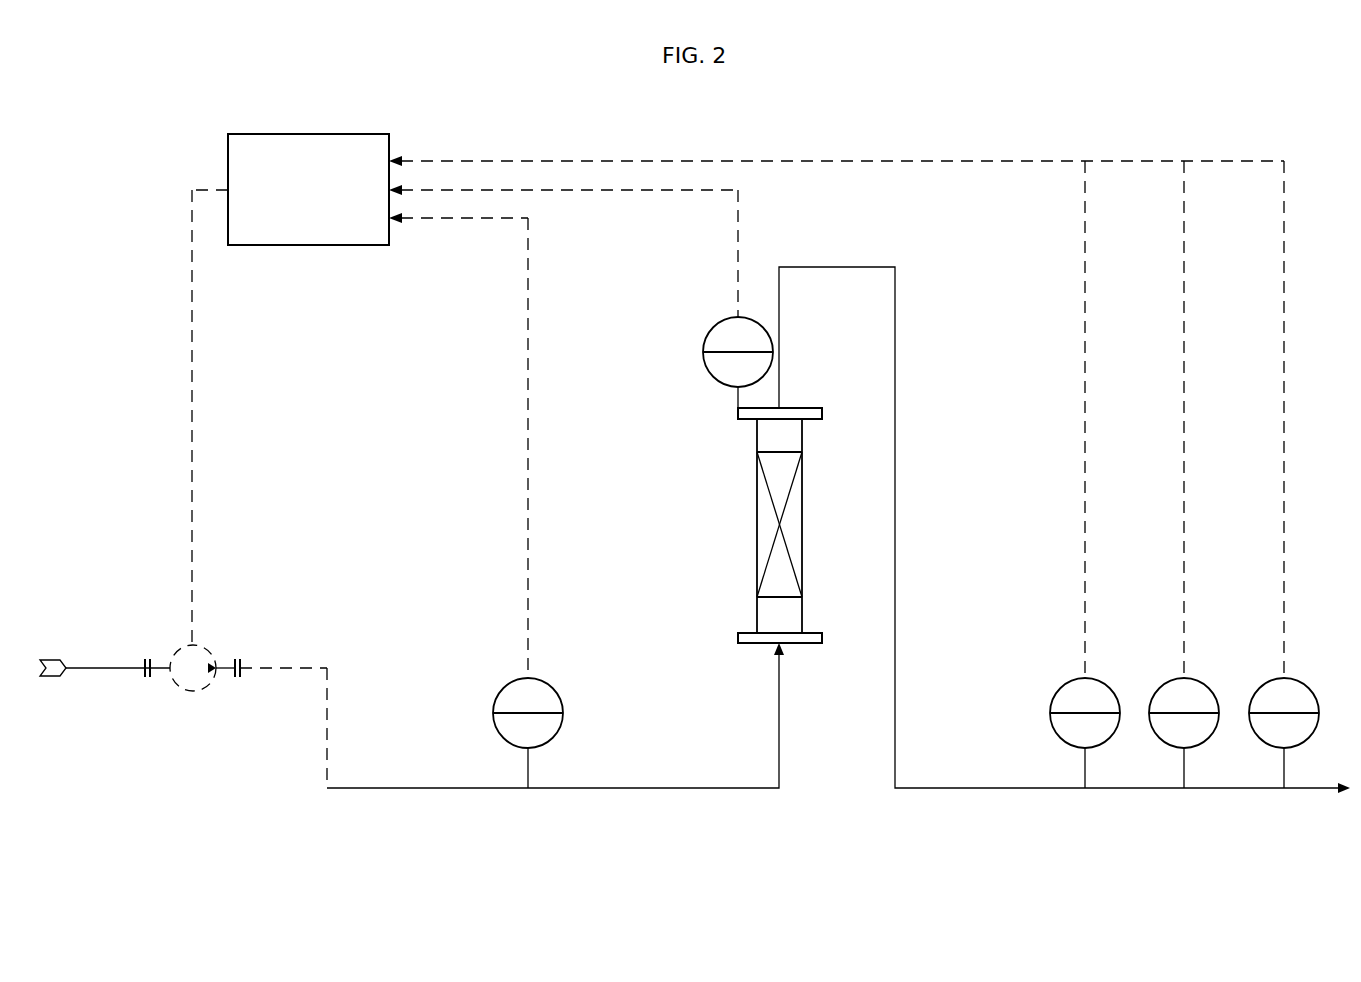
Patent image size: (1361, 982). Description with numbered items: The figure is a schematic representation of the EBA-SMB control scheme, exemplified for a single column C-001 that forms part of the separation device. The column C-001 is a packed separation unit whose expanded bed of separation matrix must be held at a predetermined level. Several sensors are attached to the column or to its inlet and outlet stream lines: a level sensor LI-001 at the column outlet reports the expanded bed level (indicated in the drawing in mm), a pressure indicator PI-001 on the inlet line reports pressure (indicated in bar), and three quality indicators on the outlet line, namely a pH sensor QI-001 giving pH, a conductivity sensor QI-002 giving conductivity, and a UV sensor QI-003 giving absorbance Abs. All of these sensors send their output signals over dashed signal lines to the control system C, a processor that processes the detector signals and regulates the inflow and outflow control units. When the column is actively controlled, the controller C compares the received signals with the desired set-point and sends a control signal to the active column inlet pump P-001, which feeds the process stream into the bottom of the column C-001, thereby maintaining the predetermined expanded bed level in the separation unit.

The control system C is at (308, 189).
The active column inlet pump P-001 is at (140, 686).
The column C-001 is at (755, 525).
The level sensor LI-001 is at (738, 362).
The pressure indicator PI-001 is at (528, 733).
The pH sensor QI-001 is at (1085, 733).
The conductivity sensor QI-002 is at (1184, 733).
The UV sensor QI-003 is at (1284, 733).
The level unit label mm is at (684, 372).
The pressure unit label bar is at (478, 738).
The pH unit label pH is at (1038, 736).
The absorbance unit label Abs is at (1308, 778).